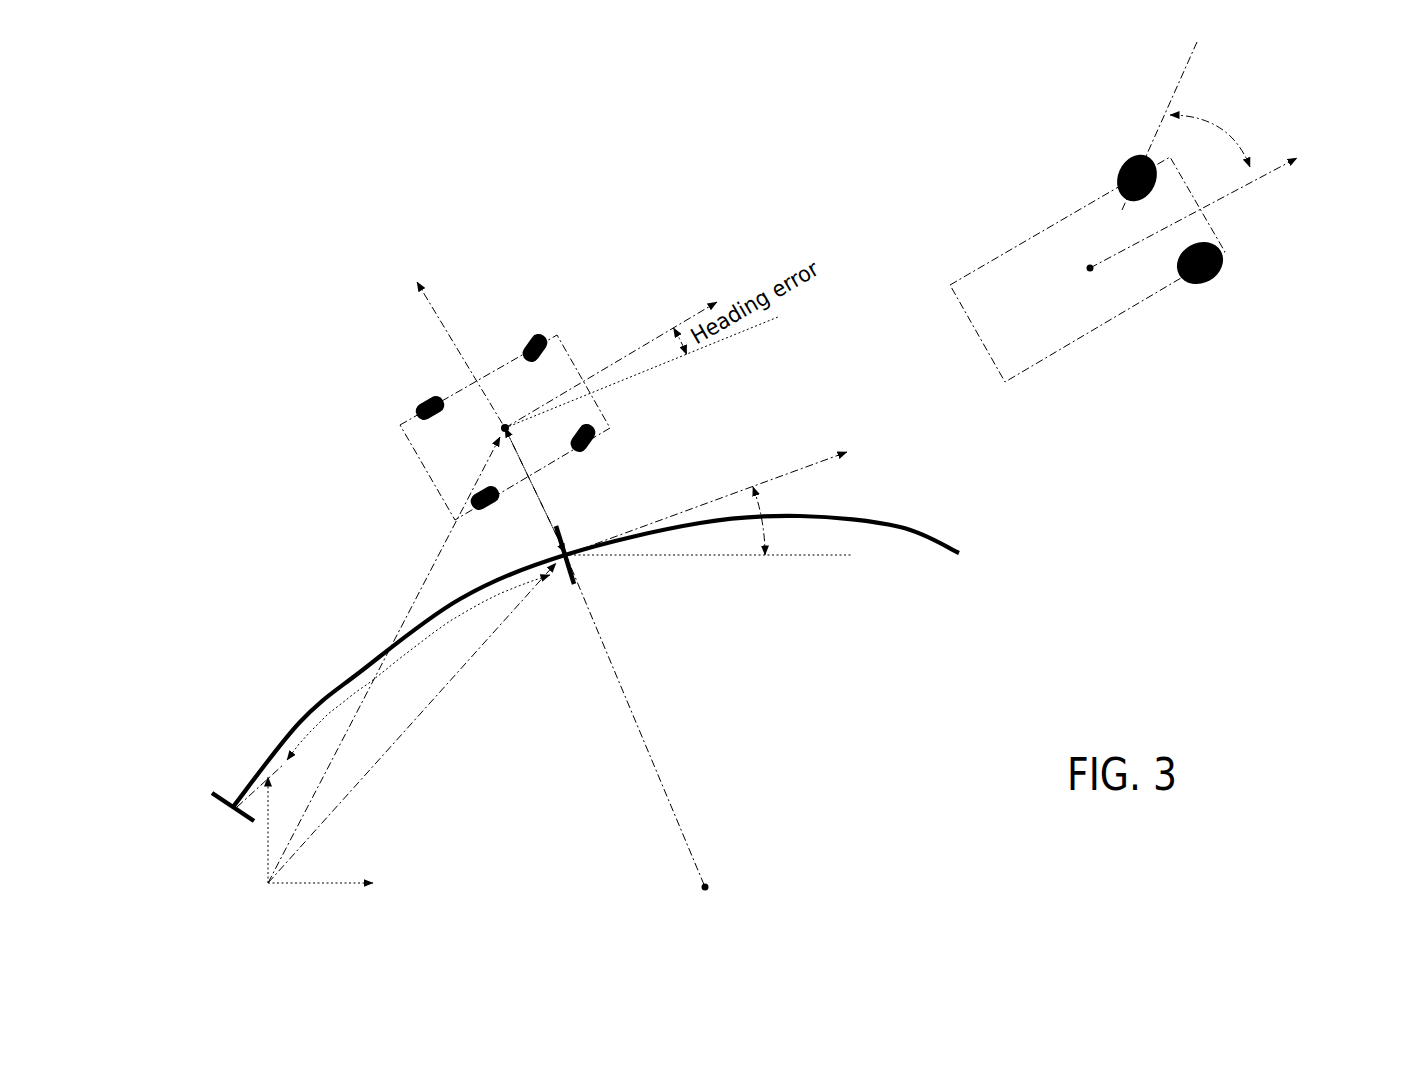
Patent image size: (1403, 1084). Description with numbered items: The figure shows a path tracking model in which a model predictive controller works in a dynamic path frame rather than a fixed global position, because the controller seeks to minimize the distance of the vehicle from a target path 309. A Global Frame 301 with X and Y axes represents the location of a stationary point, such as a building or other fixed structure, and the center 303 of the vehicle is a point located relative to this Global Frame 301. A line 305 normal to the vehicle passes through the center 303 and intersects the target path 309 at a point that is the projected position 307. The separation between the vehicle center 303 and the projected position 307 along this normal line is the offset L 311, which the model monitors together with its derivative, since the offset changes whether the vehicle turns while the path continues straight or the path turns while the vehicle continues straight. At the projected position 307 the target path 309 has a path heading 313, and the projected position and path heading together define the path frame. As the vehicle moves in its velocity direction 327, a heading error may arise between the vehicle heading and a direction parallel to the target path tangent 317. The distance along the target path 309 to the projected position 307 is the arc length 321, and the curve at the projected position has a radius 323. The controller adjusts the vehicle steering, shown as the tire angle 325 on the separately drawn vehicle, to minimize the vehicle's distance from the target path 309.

The Global Frame 301 is at (319, 860).
The center of the vehicle 303 is at (500, 428).
The line normal to the vehicle 305 is at (491, 385).
The projected position 307 is at (570, 558).
The target path 309 is at (585, 668).
The offset L 311 is at (588, 488).
The path heading 313 is at (761, 521).
The target path tangent 317 is at (706, 490).
The arc length 321 is at (418, 667).
The radius 323 is at (661, 722).
The tire angle 325 is at (1244, 126).
The velocity direction 327 is at (616, 342).